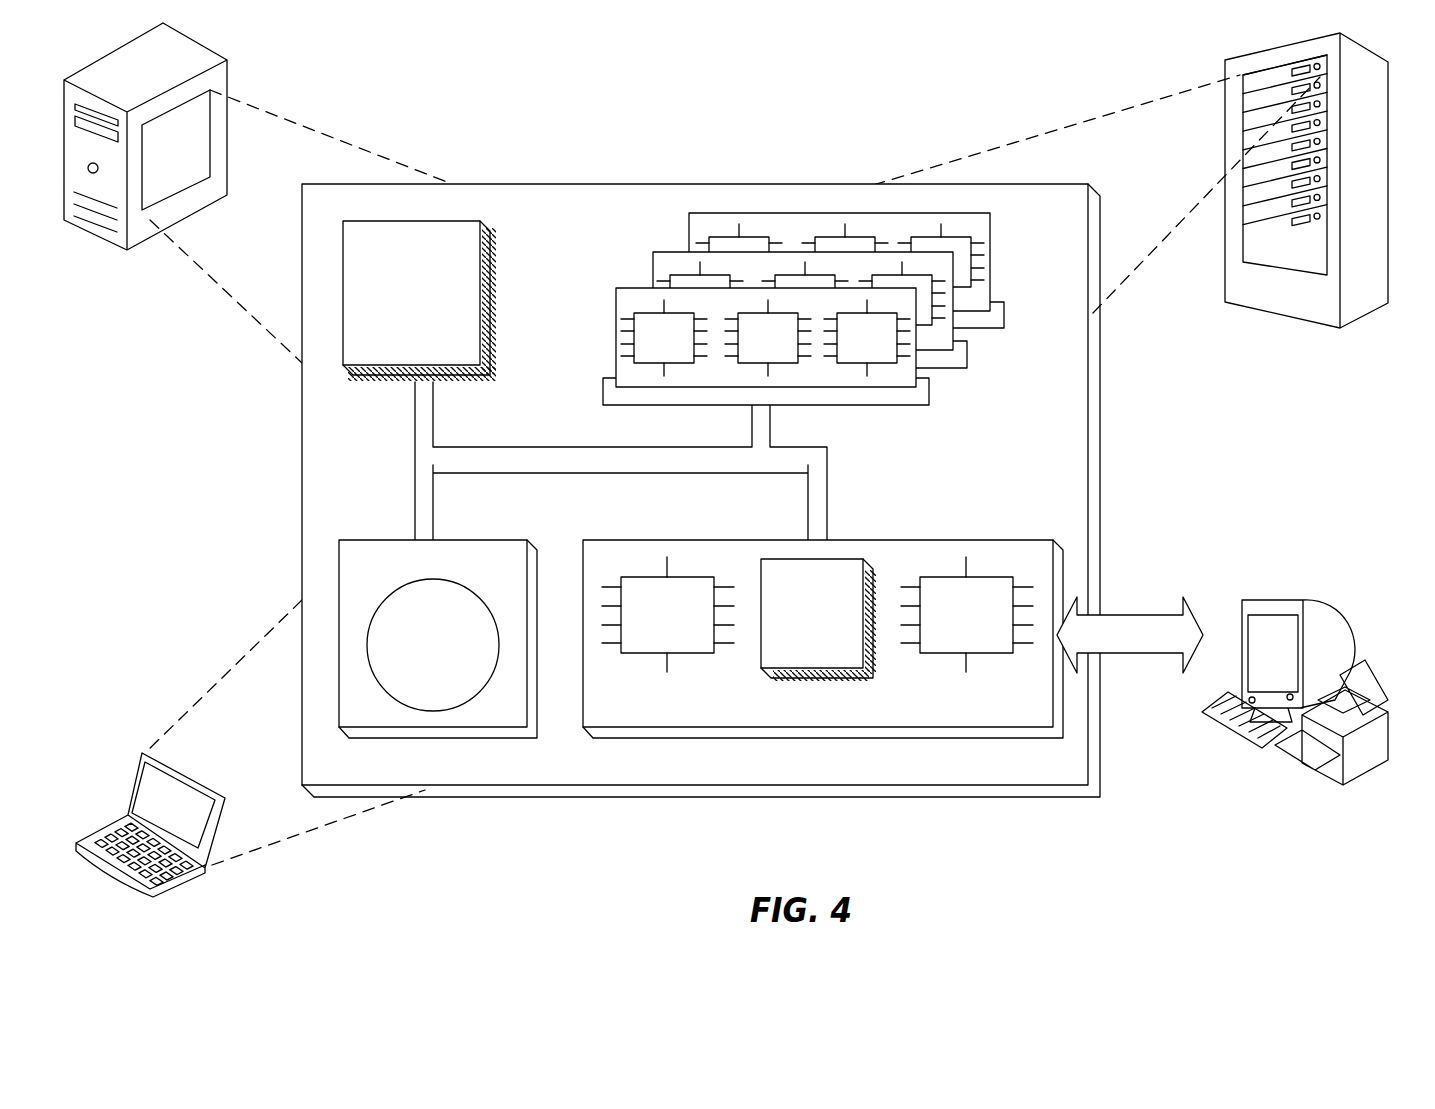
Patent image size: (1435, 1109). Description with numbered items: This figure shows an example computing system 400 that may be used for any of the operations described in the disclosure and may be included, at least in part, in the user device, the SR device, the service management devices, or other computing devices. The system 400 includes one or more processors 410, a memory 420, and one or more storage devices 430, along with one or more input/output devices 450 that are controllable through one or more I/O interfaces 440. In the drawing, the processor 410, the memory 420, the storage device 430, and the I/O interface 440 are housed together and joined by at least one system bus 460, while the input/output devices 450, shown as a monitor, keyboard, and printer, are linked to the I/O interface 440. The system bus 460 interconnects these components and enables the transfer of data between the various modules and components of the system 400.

The computing system 400 is at (517, 106).
The processor 410 is at (470, 359).
The memory 420 is at (996, 363).
The storage device 430 is at (515, 721).
The I/O interface 440 is at (935, 717).
The input/output device 450 is at (1241, 602).
The system bus 460 is at (615, 465).